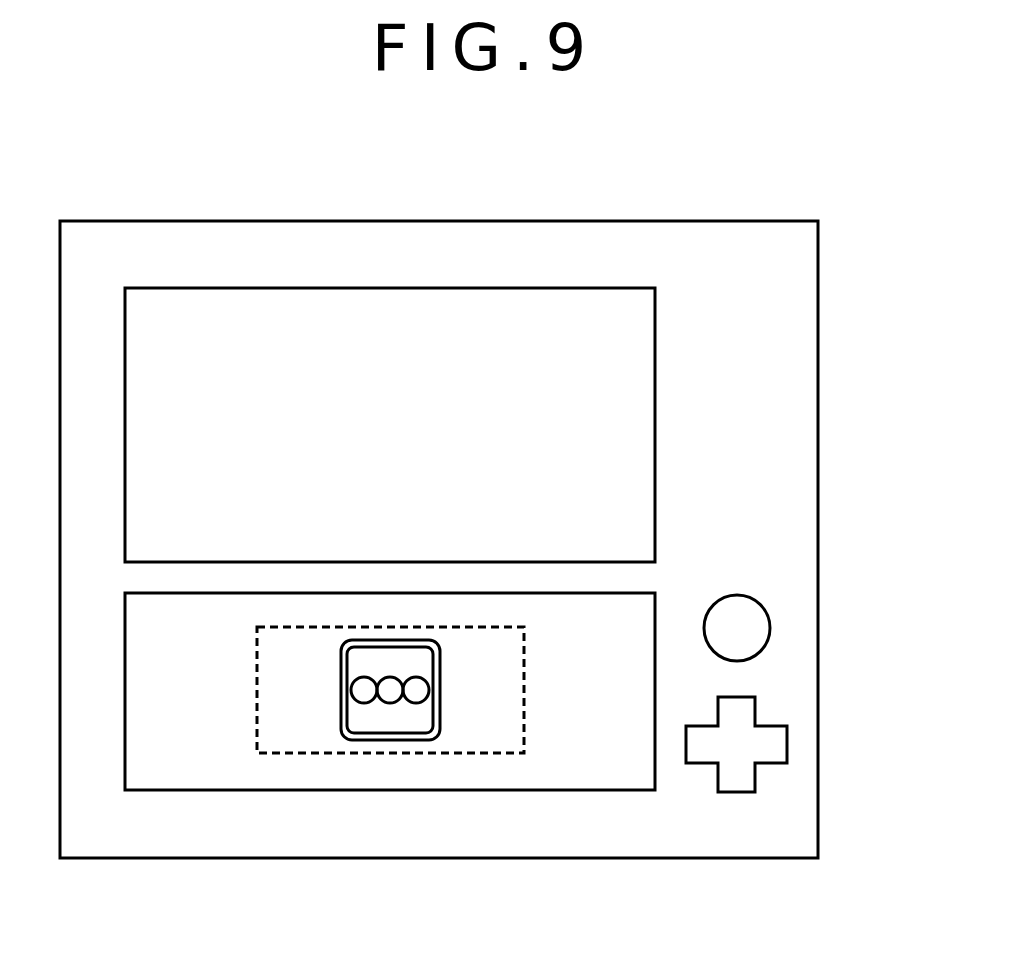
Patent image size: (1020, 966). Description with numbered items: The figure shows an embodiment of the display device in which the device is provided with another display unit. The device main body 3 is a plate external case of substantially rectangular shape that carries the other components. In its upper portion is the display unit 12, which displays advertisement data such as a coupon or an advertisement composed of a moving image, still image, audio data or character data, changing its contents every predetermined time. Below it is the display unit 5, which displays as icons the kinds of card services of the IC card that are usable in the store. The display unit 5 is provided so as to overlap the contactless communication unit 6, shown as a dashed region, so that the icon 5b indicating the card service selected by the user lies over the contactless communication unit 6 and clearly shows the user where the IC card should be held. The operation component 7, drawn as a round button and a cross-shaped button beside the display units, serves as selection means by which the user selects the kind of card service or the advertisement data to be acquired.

The device main body 3 is at (816, 319).
The display unit 12 is at (535, 315).
The display unit 5 is at (403, 777).
The contactless communication unit 6 is at (524, 685).
The icon 5b is at (341, 690).
The operation component 7 is at (753, 635).